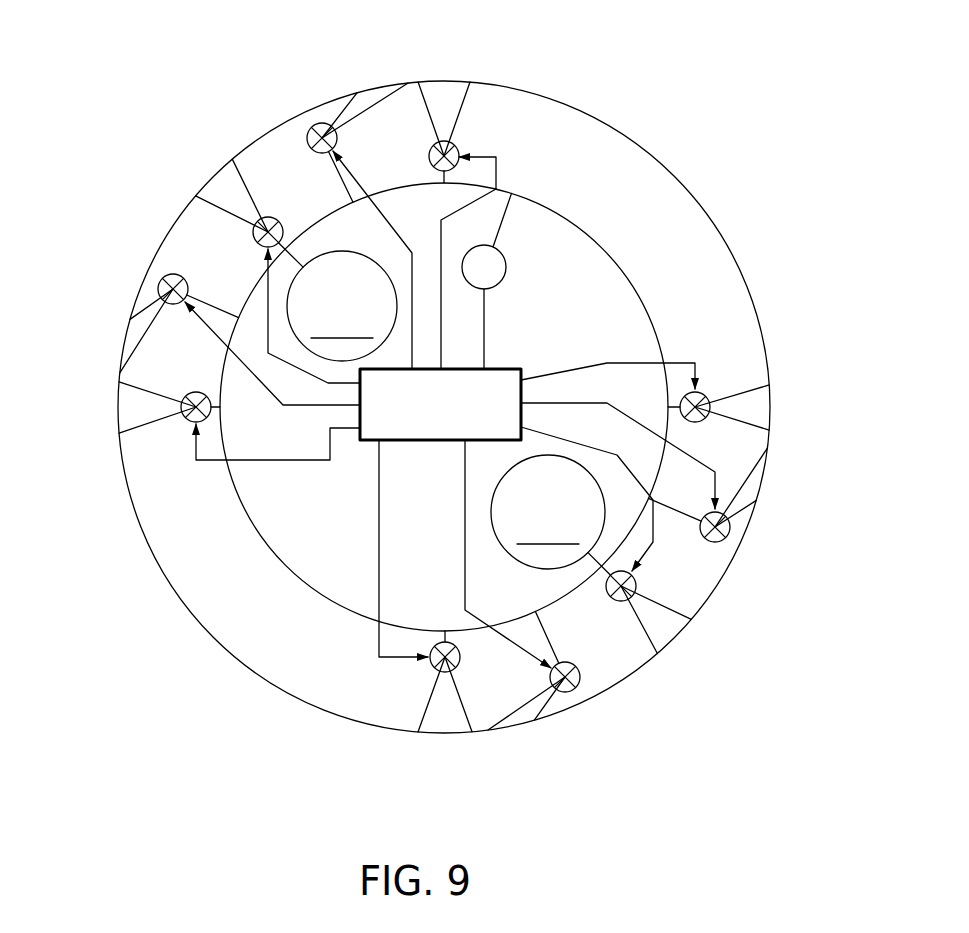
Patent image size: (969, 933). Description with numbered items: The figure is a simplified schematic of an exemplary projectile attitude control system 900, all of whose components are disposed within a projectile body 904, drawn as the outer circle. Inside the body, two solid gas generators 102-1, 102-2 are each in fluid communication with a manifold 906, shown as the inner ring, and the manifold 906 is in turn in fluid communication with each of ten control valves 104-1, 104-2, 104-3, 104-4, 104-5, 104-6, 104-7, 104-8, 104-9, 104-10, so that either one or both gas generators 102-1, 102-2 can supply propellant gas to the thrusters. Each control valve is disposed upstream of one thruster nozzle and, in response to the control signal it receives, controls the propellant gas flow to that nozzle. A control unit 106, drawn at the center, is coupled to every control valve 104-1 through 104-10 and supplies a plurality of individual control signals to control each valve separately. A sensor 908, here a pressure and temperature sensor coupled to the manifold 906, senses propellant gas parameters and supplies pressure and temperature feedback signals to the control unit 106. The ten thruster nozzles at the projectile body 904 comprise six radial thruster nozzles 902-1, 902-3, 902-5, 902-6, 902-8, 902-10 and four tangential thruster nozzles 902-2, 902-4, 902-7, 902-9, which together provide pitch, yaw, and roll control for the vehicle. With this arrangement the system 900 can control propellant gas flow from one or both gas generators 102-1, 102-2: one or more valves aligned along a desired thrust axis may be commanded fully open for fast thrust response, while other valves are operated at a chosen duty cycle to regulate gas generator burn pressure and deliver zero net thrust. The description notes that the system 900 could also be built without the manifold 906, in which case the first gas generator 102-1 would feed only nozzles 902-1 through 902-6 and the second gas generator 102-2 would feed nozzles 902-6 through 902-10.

The projectile attitude control system 900 is at (116, 104).
The projectile body 904 is at (650, 149).
The manifold 906 is at (594, 234).
The control unit 106 is at (516, 366).
The solid gas generator 102-1 is at (342, 306).
The solid gas generator 102-2 is at (548, 512).
The sensor 908 is at (508, 270).
The control valve 104-1 is at (458, 147).
The control valve 104-2 is at (310, 130).
The control valve 104-3 is at (273, 218).
The control valve 104-4 is at (183, 276).
The control valve 104-5 is at (193, 393).
The control valve 104-6 is at (432, 667).
The control valve 104-7 is at (574, 667).
The control valve 104-8 is at (636, 580).
The control valve 104-9 is at (730, 522).
The control valve 104-10 is at (705, 393).
The radial thruster nozzle 902-1 is at (447, 85).
The tangential thruster nozzle 902-2 is at (372, 93).
The radial thruster nozzle 902-3 is at (218, 192).
The tangential thruster nozzle 902-4 is at (128, 341).
The radial thruster nozzle 902-5 is at (122, 408).
The radial thruster nozzle 902-6 is at (443, 730).
The tangential thruster nozzle 902-7 is at (523, 720).
The radial thruster nozzle 902-8 is at (668, 637).
The tangential thruster nozzle 902-9 is at (765, 472).
The radial thruster nozzle 902-10 is at (772, 405).